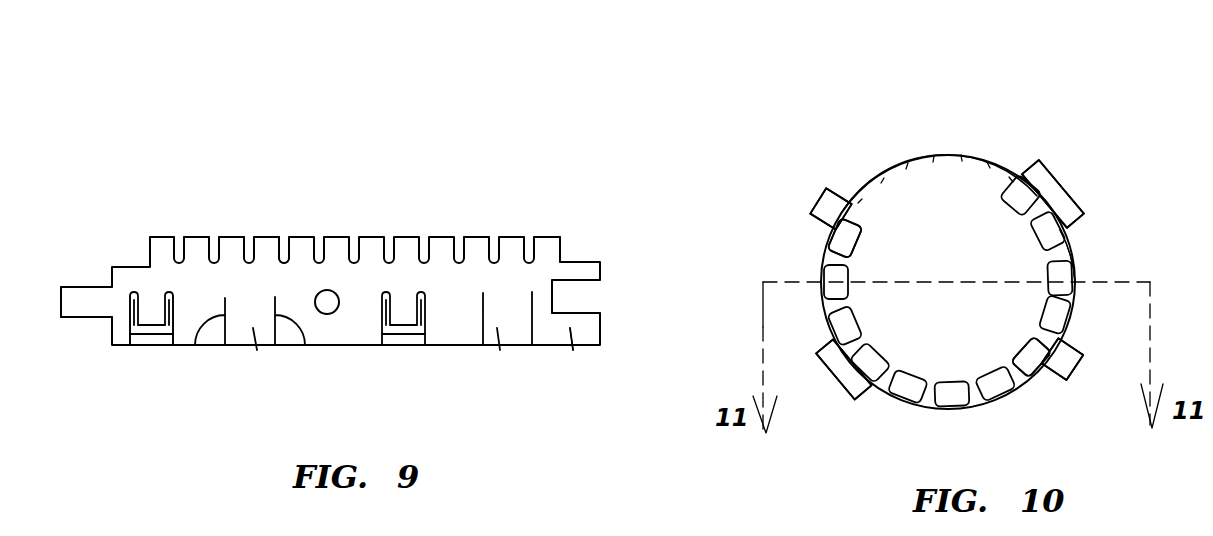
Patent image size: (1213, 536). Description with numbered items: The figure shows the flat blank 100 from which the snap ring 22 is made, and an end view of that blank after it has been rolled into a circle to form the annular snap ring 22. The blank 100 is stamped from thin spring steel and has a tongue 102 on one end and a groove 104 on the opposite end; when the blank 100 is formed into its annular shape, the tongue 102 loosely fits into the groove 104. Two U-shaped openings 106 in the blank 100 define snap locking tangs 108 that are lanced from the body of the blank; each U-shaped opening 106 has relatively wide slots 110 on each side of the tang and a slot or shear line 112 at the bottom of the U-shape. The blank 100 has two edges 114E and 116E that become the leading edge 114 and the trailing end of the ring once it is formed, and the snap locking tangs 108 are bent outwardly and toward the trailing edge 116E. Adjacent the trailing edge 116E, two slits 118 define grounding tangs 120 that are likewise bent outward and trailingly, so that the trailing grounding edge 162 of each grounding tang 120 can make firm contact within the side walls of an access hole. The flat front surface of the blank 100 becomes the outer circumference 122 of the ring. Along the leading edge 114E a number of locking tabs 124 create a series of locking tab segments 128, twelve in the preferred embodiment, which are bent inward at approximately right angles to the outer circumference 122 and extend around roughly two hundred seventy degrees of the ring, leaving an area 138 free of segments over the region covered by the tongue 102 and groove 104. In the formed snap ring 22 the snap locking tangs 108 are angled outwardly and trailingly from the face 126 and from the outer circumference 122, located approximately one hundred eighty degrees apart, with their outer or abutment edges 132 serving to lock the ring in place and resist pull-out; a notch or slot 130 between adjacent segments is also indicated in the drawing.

In FIG. 9, the blank 100 is at (390, 186).
In FIG. 9, the tongue 102 is at (93, 293).
In FIG. 9, the groove 104 is at (573, 297).
In FIG. 9, the U-shaped opening 106 is at (416, 347).
In FIG. 9, the snap locking tang 108 is at (152, 310).
In FIG. 10, the snap locking tang 108 is at (832, 200).
In FIG. 9, the slot 110 is at (133, 347).
In FIG. 9, the shear line 112 is at (157, 347).
In FIG. 9, the leading edge 114E is at (478, 234).
In FIG. 10, the leading edge 114 is at (1066, 246).
In FIG. 9, the trailing edge 116E is at (573, 350).
In FIG. 9, the slit 118 is at (194, 346).
In FIG. 9, the grounding tang 120 is at (255, 350).
In FIG. 10, the grounding tang 120 is at (1038, 180).
In FIG. 10, the outer circumference 122 is at (1076, 257).
In FIG. 9, the locking tab 124 is at (543, 236).
In FIG. 10, the face 126 is at (858, 196).
In FIG. 9, the locking tab segment 128 is at (258, 241).
In FIG. 10, the locking tab segment 128 is at (927, 337).
In FIG. 9, the notch 130 is at (283, 242).
In FIG. 10, the abutment edge 132 is at (815, 211).
In FIG. 10, the area free of segments 138 is at (888, 153).
In FIG. 10, the trailing grounding edge 162 is at (1062, 197).
In FIG. 10, the snap ring 22 is at (1023, 145).